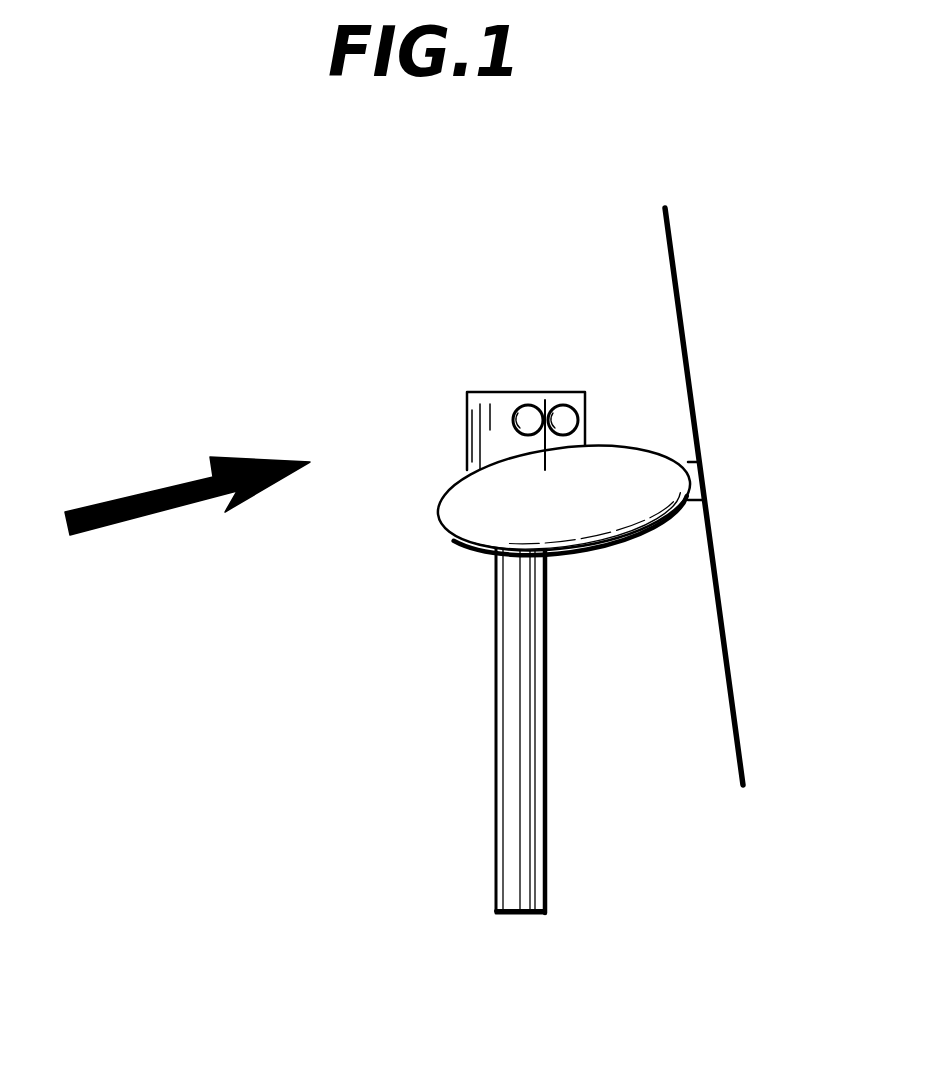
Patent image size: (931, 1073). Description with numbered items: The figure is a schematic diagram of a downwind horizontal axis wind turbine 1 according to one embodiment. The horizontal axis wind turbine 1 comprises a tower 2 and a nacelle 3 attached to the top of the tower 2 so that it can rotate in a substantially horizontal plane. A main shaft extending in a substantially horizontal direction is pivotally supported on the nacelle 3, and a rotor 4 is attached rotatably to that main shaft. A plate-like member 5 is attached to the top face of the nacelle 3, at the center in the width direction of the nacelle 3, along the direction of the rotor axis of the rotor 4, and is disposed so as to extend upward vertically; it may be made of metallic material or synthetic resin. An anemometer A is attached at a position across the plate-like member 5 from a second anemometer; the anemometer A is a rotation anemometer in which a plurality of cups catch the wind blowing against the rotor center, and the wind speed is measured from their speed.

The horizontal axis wind turbine 1 is at (458, 728).
The tower 2 is at (533, 790).
The nacelle 3 is at (448, 513).
The rotor 4 is at (693, 395).
The plate-like member 5 is at (487, 410).
The anemometer A is at (580, 394).